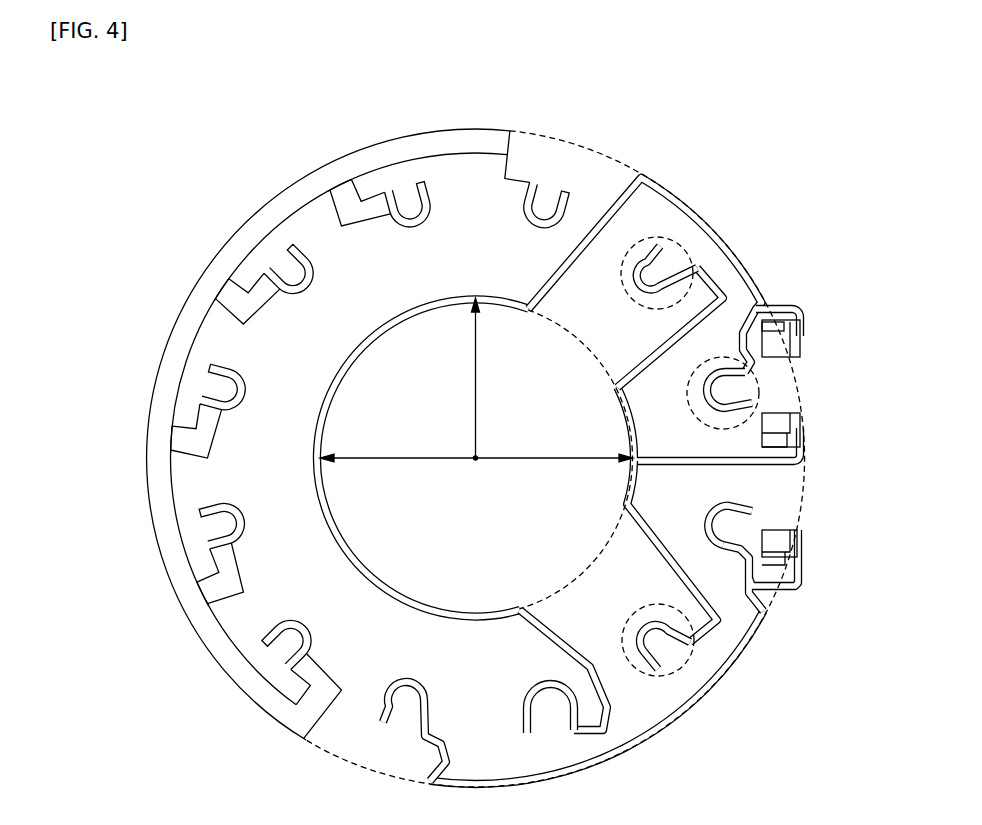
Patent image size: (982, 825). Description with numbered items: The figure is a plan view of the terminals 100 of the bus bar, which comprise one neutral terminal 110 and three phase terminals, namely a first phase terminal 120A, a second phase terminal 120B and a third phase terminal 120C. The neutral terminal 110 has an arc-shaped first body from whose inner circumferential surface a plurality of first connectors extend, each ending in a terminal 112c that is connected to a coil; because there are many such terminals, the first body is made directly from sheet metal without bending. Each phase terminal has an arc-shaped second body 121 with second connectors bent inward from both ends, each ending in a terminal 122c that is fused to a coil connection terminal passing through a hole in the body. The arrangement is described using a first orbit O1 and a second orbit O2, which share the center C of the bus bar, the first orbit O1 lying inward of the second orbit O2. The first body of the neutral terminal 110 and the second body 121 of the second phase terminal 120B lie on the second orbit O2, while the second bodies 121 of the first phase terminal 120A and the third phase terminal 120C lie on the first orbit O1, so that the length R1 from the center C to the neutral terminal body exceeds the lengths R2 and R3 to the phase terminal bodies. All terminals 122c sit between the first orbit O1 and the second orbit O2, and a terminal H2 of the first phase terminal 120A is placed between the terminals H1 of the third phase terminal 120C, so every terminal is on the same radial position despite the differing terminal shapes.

The terminals 100 is at (462, 432).
The neutral terminal 110 is at (282, 434).
The terminal 112c is at (425, 231).
The first phase terminal 120A is at (373, 356).
The second phase terminal 120B is at (781, 665).
The third phase terminal 120C is at (646, 421).
The second body 121 is at (433, 310).
The terminal 122c is at (578, 207).
The first orbit O1 is at (556, 322).
The second orbit O2 is at (580, 145).
The terminals H1 is at (672, 240).
The terminal H2 is at (760, 386).
The length R1 is at (478, 404).
The length R2 is at (400, 470).
The length R3 is at (560, 470).
The center C is at (478, 462).